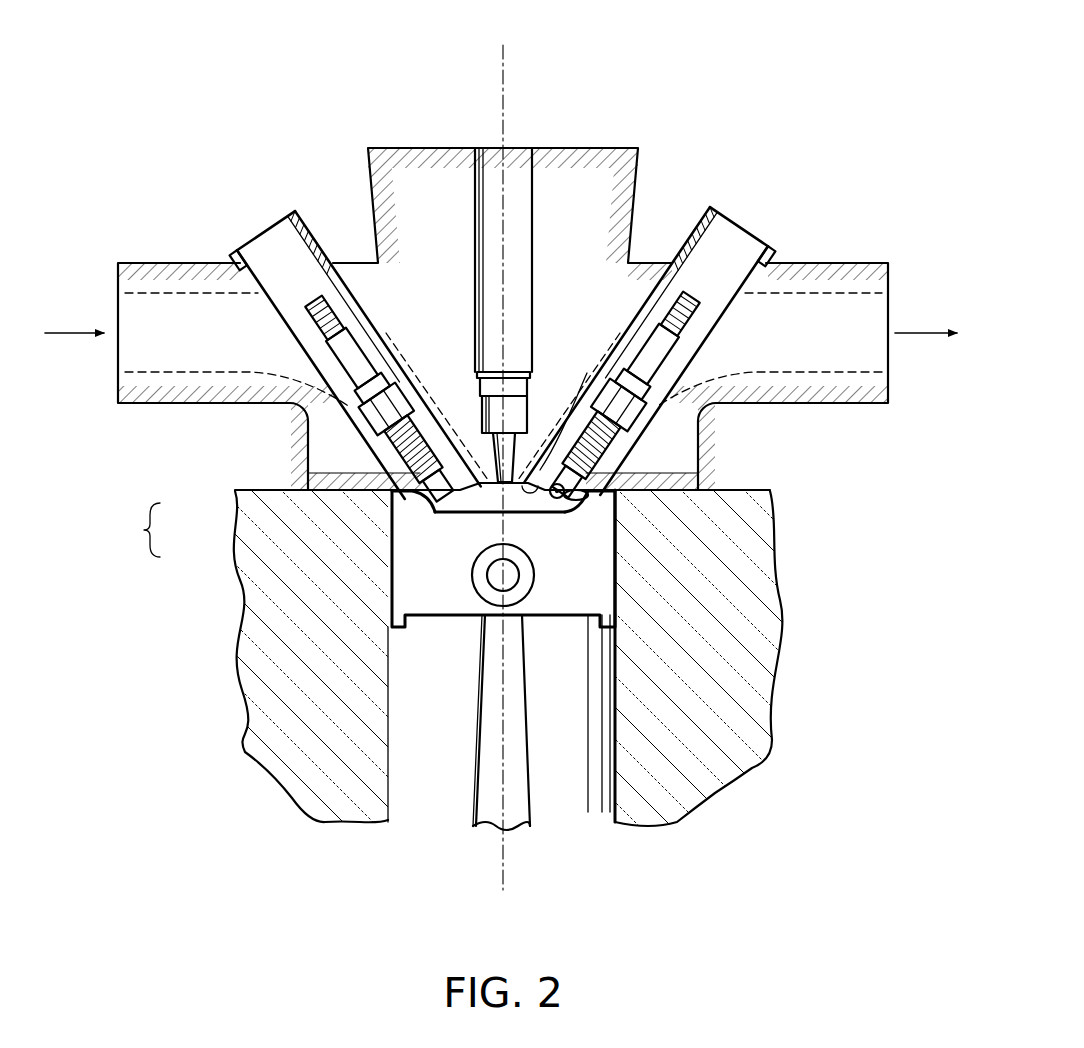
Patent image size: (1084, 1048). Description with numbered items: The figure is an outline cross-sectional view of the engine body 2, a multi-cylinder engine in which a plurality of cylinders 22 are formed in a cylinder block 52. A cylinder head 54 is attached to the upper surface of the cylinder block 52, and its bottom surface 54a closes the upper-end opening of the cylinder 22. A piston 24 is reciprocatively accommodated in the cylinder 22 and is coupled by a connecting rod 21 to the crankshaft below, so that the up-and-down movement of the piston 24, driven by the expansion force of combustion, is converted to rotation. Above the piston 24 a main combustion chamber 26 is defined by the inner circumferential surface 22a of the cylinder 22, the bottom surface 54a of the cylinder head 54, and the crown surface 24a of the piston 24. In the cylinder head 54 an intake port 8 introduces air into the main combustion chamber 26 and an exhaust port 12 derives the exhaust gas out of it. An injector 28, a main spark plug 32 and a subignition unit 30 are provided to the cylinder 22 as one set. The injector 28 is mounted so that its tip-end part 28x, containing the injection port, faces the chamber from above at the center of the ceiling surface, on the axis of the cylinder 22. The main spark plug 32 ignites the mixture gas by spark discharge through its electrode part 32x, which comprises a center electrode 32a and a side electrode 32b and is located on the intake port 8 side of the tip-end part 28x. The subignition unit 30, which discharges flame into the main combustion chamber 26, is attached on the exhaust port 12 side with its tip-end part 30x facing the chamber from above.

The engine body 2 is at (596, 104).
The intake port 8 is at (178, 300).
The exhaust port 12 is at (835, 300).
The connecting rod 21 is at (476, 820).
The cylinder 22 is at (415, 799).
The inner circumferential surface 22a is at (612, 820).
The piston 24 is at (575, 618).
The crown surface 24a is at (572, 500).
The main combustion chamber 26 is at (537, 507).
The injector 28 is at (484, 140).
The tip-end part 28x is at (490, 463).
The subignition unit 30 is at (697, 284).
The tip-end part 30x is at (578, 489).
The main spark plug 32 is at (310, 284).
The electrode part 32x is at (124, 530).
The center electrode 32a is at (412, 493).
The side electrode 32b is at (435, 512).
The cylinder block 52 is at (790, 654).
The cylinder head 54 is at (838, 395).
The bottom surface 54a is at (541, 462).